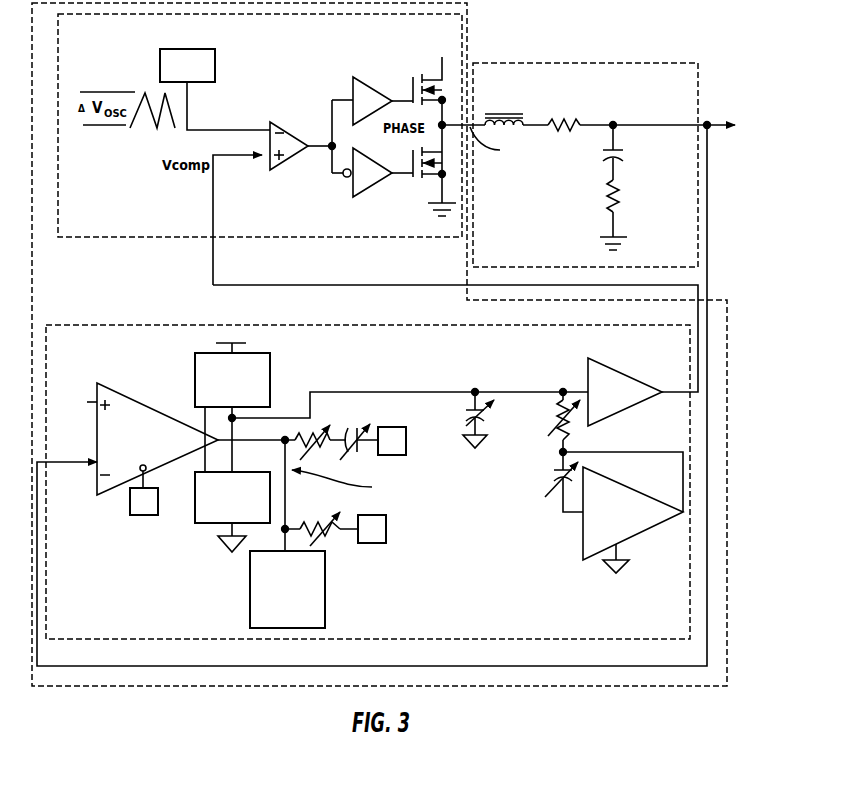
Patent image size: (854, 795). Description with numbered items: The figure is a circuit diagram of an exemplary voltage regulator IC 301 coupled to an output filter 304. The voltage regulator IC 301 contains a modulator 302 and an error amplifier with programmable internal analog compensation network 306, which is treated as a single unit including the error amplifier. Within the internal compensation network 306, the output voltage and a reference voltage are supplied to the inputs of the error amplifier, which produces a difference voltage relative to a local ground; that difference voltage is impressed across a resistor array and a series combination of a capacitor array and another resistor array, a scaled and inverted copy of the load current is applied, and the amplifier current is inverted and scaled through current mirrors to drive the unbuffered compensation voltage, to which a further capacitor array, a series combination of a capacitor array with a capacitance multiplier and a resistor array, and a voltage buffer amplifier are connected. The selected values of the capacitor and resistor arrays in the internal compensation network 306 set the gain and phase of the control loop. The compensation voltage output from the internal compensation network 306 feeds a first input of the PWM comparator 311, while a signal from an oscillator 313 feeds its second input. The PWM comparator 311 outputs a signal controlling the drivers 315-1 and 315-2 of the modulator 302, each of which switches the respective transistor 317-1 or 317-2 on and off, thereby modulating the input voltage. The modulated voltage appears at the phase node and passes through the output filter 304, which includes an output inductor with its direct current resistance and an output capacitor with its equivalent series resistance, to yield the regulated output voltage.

The voltage regulator IC 301 is at (98, 312).
The modulator 302 is at (106, 228).
The output filter 304 is at (517, 251).
The internal compensation network 306 is at (561, 622).
The PWM comparator 311 is at (284, 168).
The oscillator 313 is at (160, 62).
The driver 315-1 is at (353, 87).
The driver 315-2 is at (353, 183).
The transistor 317-1 is at (438, 85).
The transistor 317-2 is at (425, 178).